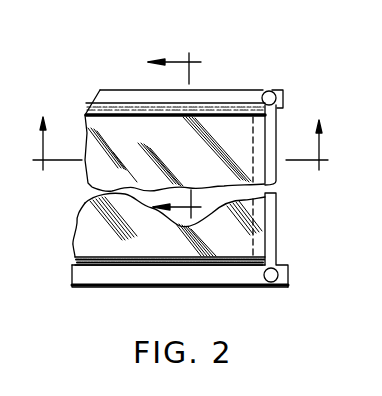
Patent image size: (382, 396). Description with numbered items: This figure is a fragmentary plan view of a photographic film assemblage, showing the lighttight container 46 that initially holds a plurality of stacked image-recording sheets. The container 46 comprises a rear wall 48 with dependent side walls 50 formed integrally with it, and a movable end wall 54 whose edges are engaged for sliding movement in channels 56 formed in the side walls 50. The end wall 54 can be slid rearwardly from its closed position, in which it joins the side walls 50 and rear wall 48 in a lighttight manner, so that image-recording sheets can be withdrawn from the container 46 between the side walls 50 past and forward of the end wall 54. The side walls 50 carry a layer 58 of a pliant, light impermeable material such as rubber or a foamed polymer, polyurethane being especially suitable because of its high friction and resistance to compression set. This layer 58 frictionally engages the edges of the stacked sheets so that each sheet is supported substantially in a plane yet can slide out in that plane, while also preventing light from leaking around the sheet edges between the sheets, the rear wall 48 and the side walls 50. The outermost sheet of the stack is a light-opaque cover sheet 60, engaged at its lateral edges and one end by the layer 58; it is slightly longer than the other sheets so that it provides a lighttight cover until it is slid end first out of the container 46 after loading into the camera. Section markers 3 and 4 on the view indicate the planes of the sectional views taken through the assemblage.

The lighttight container 46 is at (271, 57).
The rear wall 48 is at (125, 264).
The side walls 50 is at (113, 90).
The movable end wall 54 is at (269, 223).
The channels 56 is at (278, 90).
The layer of pliant light impermeable material 58 is at (211, 113).
The light-opaque cover sheet 60 is at (186, 163).
The section line 3- 3 is at (181, 135).
The section line 4- 4 is at (180, 155).